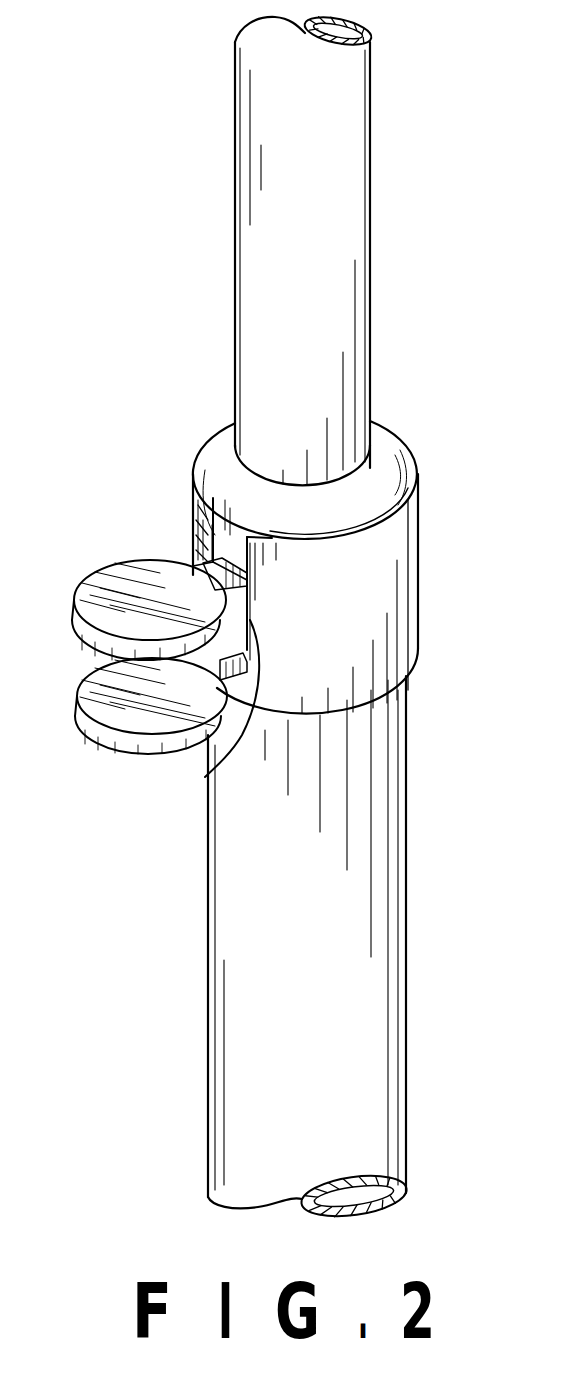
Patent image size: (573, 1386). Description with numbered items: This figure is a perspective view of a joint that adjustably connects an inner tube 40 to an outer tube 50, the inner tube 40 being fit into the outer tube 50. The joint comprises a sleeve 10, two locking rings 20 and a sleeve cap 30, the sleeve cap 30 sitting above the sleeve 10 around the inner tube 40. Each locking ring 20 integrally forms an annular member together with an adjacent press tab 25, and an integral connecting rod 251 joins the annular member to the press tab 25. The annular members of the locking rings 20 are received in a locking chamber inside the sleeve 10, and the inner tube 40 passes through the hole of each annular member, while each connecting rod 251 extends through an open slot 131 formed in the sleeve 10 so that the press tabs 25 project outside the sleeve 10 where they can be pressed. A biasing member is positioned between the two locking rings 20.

The sleeve 10 is at (382, 602).
The locking ring 20 is at (171, 543).
The press tab 25 is at (106, 597).
The sleeve cap 30 is at (210, 437).
The inner tube 40 is at (257, 285).
The outer tube 50 is at (232, 929).
The open slot 131 is at (210, 768).
The connecting rod 251 is at (190, 492).